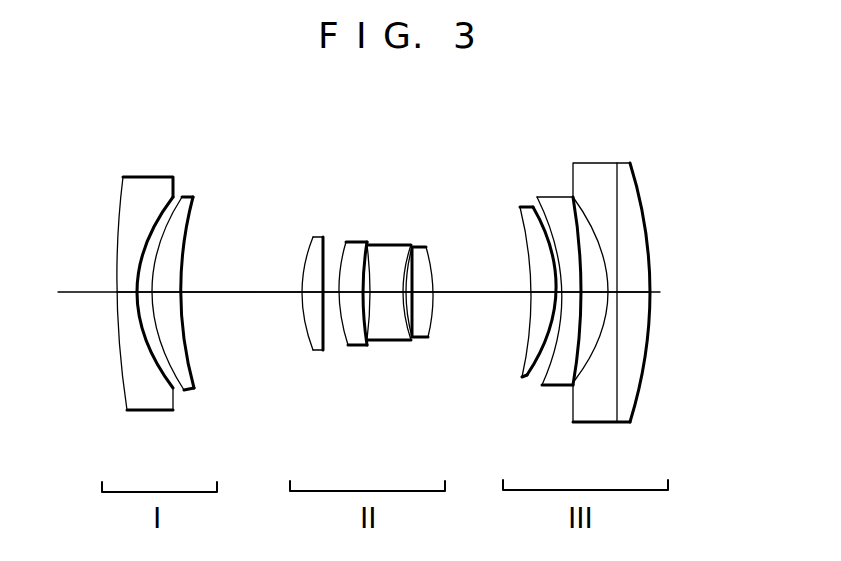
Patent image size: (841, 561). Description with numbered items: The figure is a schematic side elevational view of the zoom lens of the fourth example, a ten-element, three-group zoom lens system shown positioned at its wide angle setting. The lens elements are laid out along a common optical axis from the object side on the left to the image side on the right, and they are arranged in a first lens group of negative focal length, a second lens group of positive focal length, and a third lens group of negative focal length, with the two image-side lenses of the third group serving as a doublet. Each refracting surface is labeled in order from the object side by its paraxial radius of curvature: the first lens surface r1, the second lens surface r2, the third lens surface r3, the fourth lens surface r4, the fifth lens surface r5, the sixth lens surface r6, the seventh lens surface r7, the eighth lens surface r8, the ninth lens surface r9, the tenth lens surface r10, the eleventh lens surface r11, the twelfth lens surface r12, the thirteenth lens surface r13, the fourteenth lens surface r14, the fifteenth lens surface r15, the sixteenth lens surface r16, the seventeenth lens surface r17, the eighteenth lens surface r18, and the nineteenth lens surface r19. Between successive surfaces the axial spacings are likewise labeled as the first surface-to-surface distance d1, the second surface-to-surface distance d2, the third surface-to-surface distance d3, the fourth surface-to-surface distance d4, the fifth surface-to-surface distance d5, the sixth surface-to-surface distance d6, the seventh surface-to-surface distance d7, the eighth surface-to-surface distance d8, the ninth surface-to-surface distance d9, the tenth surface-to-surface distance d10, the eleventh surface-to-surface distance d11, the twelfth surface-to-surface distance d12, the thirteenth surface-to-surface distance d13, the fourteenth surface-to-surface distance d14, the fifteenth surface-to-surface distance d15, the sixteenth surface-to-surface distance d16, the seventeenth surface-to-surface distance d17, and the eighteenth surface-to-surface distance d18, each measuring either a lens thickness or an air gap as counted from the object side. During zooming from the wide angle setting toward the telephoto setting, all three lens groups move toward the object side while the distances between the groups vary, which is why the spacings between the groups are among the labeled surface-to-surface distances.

The first lens surface r1 is at (121, 200).
The second lens surface r2 is at (158, 212).
The third lens surface r3 is at (178, 207).
The fourth lens surface r4 is at (192, 211).
The fifth lens surface r5 is at (310, 238).
The sixth lens surface r6 is at (324, 238).
The seventh lens surface r7 is at (343, 243).
The eighth lens surface r8 is at (365, 257).
The ninth lens surface r9 is at (366, 258).
The tenth lens surface r10 is at (405, 262).
The eleventh lens surface r11 is at (406, 262).
The twelfth lens surface r12 is at (431, 258).
The thirteenth lens surface r13 is at (520, 222).
The fourteenth lens surface r14 is at (536, 207).
The fifteenth lens surface r15 is at (546, 212).
The sixteenth lens surface r16 is at (572, 226).
The seventeenth lens surface r17 is at (585, 215).
The eighteenth lens surface r18 is at (618, 192).
The nineteenth lens surface r19 is at (641, 200).
The first surface-to-surface distance d1 is at (127, 297).
The second surface-to-surface distance d2 is at (146, 300).
The third surface-to-surface distance d3 is at (168, 302).
The fourth surface-to-surface distance d4 is at (237, 296).
The fifth surface-to-surface distance d5 is at (307, 300).
The sixth surface-to-surface distance d6 is at (336, 300).
The seventh surface-to-surface distance d7 is at (361, 300).
The eighth surface-to-surface distance d8 is at (378, 300).
The ninth surface-to-surface distance d9 is at (390, 300).
The tenth surface-to-surface distance d10 is at (414, 300).
The eleventh surface-to-surface distance d11 is at (433, 300).
The twelfth surface-to-surface distance d12 is at (470, 296).
The thirteenth surface-to-surface distance d13 is at (543, 300).
The fourteenth surface-to-surface distance d14 is at (559, 300).
The fifteenth surface-to-surface distance d15 is at (568, 300).
The sixteenth surface-to-surface distance d16 is at (592, 300).
The seventeenth surface-to-surface distance d17 is at (607, 300).
The eighteenth surface-to-surface distance d18 is at (662, 317).